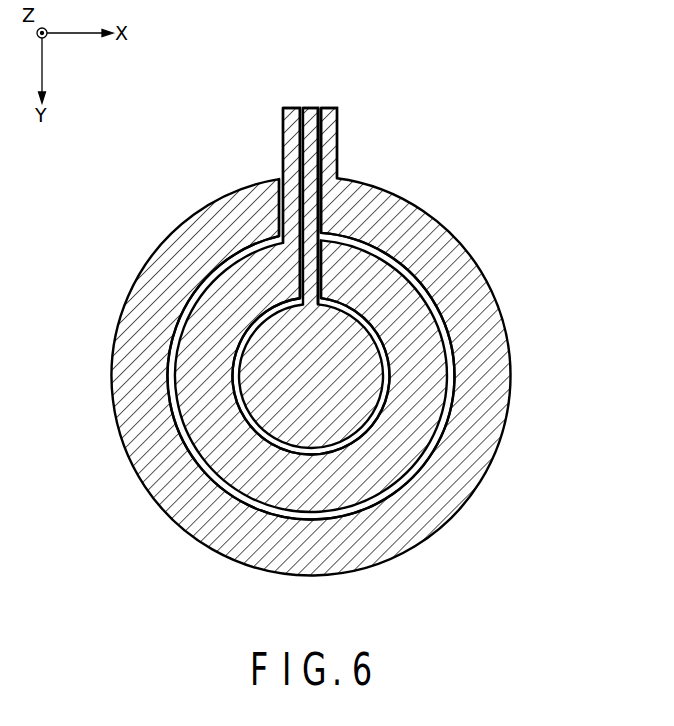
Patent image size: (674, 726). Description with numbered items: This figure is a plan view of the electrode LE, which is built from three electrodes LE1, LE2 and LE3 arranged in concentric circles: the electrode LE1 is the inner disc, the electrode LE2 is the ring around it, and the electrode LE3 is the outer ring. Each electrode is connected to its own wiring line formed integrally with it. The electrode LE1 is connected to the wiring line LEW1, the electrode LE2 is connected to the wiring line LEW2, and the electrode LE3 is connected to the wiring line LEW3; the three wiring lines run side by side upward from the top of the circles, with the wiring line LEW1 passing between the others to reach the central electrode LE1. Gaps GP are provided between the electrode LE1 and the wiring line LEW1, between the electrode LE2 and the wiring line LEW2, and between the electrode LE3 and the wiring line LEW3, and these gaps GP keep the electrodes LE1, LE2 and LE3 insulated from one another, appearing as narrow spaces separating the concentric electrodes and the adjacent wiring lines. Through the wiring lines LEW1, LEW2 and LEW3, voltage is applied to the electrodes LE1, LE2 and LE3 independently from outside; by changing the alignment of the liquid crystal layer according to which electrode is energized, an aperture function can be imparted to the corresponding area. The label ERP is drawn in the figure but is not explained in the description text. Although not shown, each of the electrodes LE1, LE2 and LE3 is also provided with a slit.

The electrode LE1 is at (345, 429).
The electrode LE2 is at (418, 379).
The electrode LE3 is at (428, 521).
The wiring line LEW1 is at (312, 128).
The wiring line LEW2 is at (291, 132).
The wiring line LEW3 is at (333, 161).
The gap GP is at (281, 194).
The electrode region pattern ERP is at (522, 114).
The electrode LE is at (575, 155).